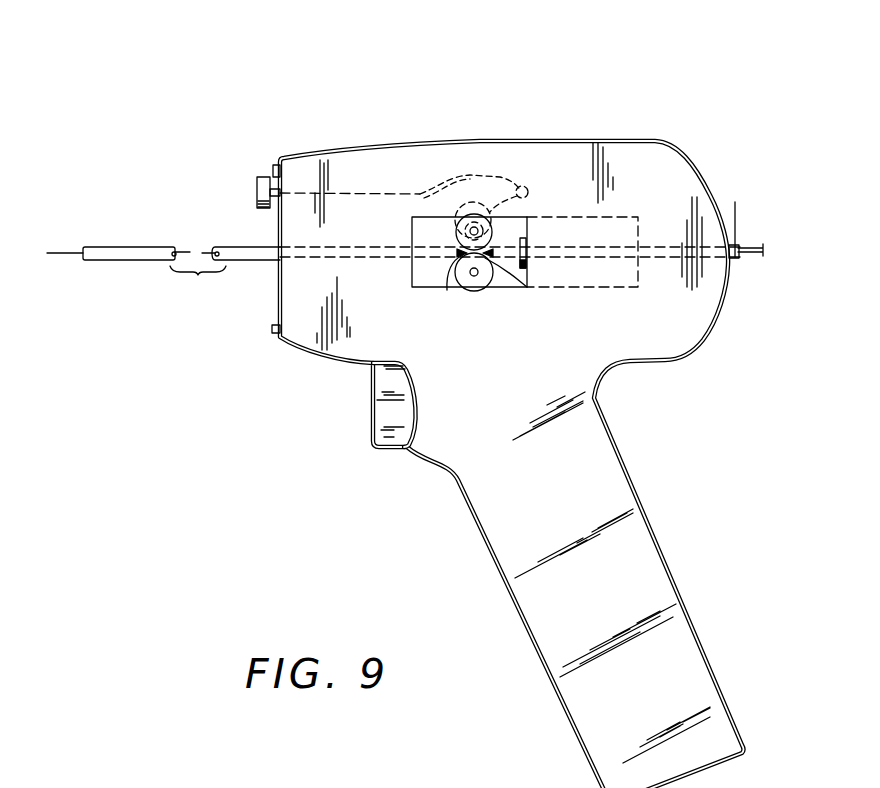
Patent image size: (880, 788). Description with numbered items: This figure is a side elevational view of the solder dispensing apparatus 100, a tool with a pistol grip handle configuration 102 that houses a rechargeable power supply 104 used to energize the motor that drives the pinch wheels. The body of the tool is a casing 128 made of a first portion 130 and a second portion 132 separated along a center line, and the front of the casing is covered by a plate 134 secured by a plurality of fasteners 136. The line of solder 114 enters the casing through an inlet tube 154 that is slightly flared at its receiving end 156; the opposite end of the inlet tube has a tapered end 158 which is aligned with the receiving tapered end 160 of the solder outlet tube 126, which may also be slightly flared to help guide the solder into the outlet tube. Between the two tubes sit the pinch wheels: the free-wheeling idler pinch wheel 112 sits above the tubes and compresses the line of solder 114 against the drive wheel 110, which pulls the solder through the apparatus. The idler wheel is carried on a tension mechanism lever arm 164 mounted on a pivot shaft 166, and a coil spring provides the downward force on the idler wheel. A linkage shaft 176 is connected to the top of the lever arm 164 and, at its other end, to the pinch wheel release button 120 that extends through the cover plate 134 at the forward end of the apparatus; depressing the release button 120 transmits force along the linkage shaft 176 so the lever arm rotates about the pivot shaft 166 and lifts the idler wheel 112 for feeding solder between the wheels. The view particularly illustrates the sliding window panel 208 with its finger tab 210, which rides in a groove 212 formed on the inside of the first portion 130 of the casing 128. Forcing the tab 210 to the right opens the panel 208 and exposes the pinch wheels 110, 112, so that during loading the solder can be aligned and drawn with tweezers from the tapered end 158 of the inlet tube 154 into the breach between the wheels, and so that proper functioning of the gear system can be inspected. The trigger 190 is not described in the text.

The solder dispensing apparatus 100 is at (720, 70).
The pistol grip handle configuration 102 is at (487, 493).
The rechargeable power supply 104 is at (613, 552).
The drive wheel 110 is at (478, 272).
The idler pinch wheel 112 is at (496, 226).
The line of solder 114 is at (58, 258).
The pinch wheel release button 120 is at (257, 188).
The solder outlet tube 126 is at (141, 246).
The casing 128 is at (640, 139).
The first portion 130 is at (470, 152).
The second portion 132 is at (420, 153).
The plate 134 is at (280, 305).
The fasteners 136 is at (274, 167).
The inlet tube 154 is at (705, 259).
The receiving end 156 is at (736, 204).
The tapered end 158 is at (520, 288).
The receiving tapered end 160 is at (447, 288).
The tension mechanism lever arm 164 is at (477, 202).
The pivot shaft 166 is at (527, 189).
The linkage shaft 176 is at (372, 190).
The trigger 190 is at (383, 412).
The sliding window panel 208 is at (617, 213).
The finger tab 210 is at (525, 265).
The groove 212 is at (578, 288).